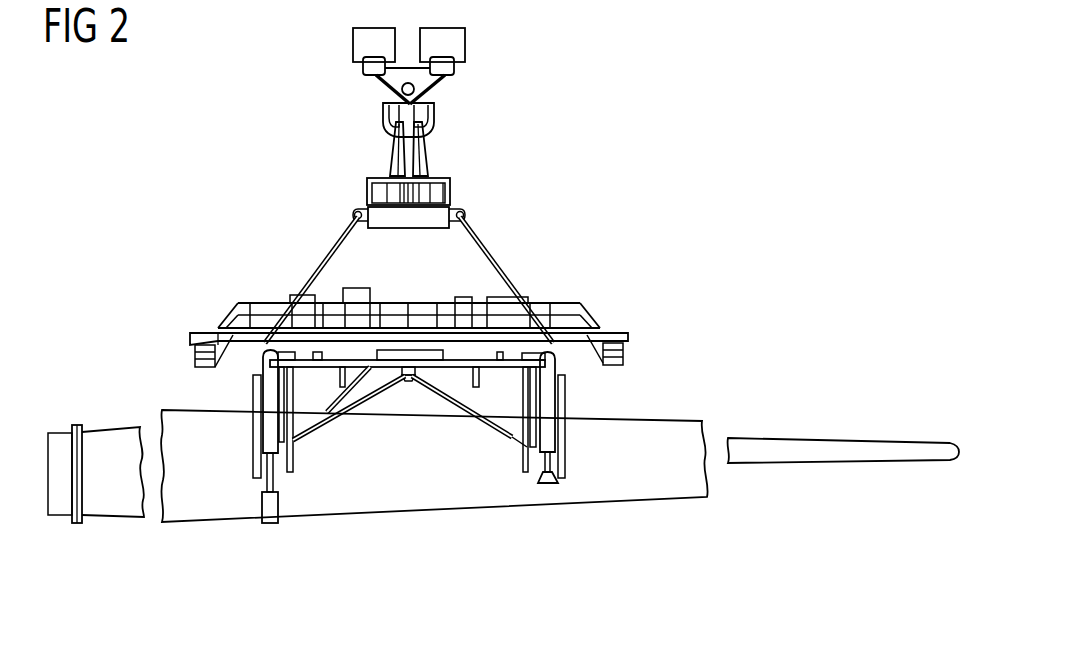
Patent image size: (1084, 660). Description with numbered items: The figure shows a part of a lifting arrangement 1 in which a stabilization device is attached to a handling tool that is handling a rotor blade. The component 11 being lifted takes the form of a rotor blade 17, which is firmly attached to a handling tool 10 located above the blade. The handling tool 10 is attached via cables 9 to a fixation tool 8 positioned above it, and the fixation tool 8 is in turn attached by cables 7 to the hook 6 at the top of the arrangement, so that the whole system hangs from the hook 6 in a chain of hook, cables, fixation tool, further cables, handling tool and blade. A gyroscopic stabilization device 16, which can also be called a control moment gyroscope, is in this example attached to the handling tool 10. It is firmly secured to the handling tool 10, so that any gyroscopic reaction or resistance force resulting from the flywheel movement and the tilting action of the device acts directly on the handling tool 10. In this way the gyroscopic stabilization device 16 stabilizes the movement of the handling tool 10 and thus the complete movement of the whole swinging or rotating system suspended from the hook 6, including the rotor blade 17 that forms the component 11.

The lifting arrangement 1 is at (592, 157).
The hook 6 is at (436, 118).
The cables 7 is at (383, 148).
The fixation tool 8 is at (352, 212).
The cables 9 is at (488, 237).
The handling tool 10 is at (222, 320).
The component 11 is at (680, 392).
The gyroscopic stabilization device 16 is at (362, 295).
The rotor blade 17 is at (638, 488).